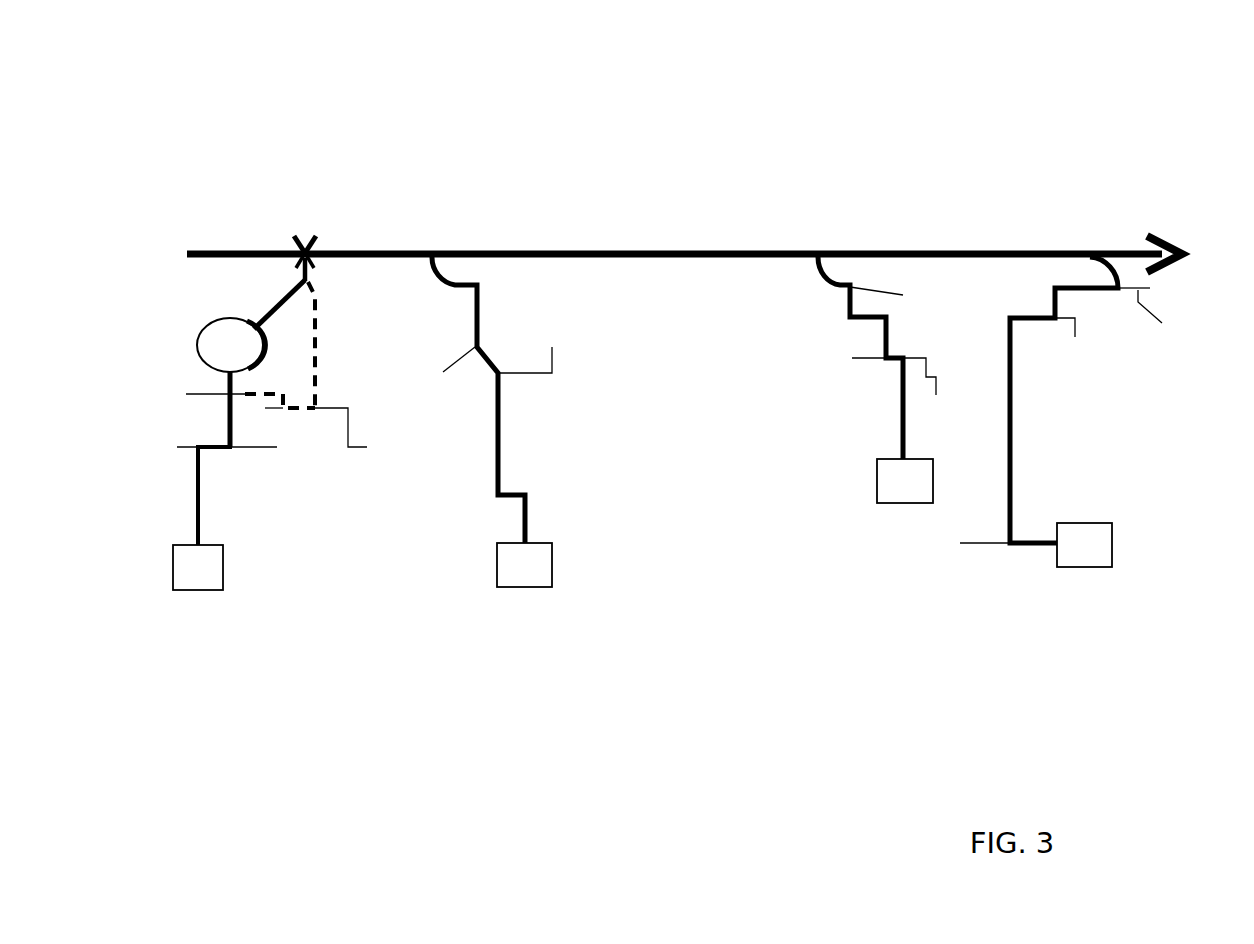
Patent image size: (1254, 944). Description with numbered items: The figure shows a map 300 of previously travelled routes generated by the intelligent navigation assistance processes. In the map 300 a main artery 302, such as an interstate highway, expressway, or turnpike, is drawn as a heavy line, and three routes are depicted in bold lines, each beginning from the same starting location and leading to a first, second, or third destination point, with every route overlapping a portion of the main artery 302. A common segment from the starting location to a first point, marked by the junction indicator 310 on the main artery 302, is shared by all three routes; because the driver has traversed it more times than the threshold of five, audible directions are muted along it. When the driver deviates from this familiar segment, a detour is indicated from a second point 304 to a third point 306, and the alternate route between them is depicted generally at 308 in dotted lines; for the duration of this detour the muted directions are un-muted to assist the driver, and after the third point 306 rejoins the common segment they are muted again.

The map 300 is at (238, 63).
The main artery 302 is at (1122, 250).
The detour point P2 304 is at (230, 394).
The detour point P3 306 is at (297, 278).
The alternate route 308 is at (318, 342).
The junction point 310 is at (309, 228).